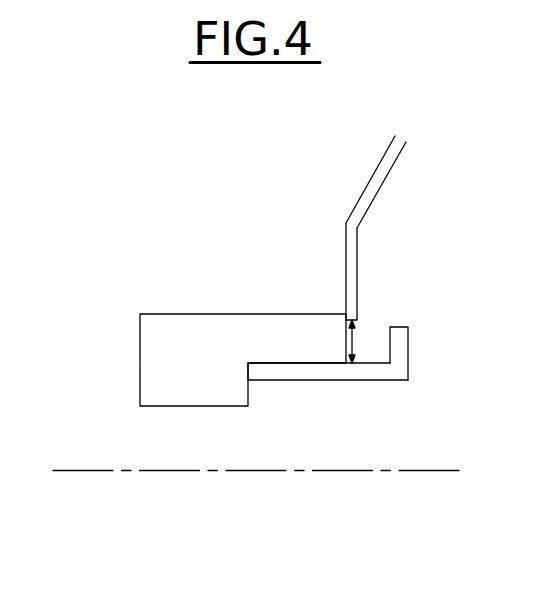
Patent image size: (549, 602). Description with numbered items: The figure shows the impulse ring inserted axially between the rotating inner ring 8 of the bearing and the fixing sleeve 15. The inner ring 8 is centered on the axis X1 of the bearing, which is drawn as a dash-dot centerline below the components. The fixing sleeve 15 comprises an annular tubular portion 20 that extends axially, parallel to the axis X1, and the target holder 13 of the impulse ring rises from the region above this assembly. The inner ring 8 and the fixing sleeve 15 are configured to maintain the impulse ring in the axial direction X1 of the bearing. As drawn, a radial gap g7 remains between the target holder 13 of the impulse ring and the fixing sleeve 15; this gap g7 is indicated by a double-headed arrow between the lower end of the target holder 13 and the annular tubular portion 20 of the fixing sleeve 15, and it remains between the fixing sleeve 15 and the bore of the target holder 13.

The rotating inner ring 8 is at (142, 348).
The target holder 13 is at (370, 222).
The fixing sleeve 15 is at (390, 381).
The annular tubular portion 20 is at (315, 370).
The radial gap g7 is at (362, 339).
The axis X1 is at (73, 470).